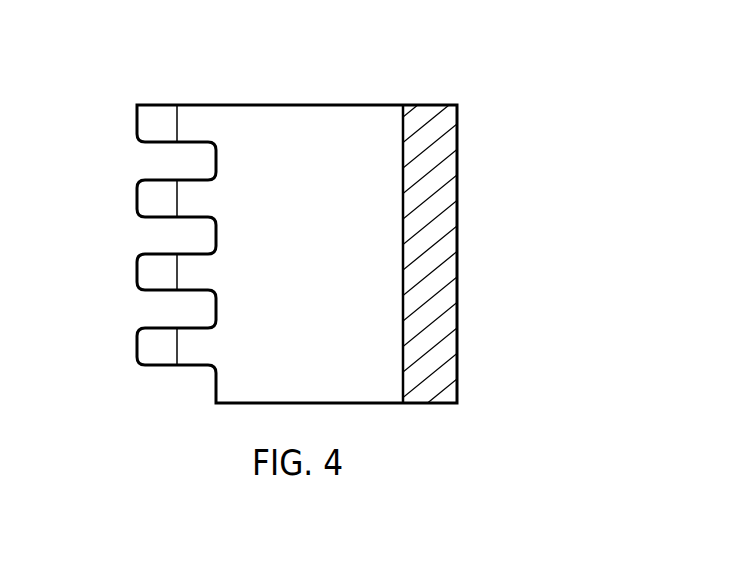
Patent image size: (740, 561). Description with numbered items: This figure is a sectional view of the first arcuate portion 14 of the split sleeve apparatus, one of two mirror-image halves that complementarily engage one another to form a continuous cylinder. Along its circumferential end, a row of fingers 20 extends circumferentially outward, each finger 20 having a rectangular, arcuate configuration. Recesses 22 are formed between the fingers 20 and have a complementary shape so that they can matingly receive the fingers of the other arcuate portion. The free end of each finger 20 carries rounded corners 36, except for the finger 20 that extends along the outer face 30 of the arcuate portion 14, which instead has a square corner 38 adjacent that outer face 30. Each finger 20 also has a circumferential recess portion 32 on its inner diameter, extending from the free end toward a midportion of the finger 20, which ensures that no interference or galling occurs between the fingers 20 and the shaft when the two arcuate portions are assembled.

The first arcuate portion 14 is at (458, 155).
The outer face 30 is at (305, 102).
The square corner 38 is at (137, 103).
The recesses 22 is at (210, 162).
The rounded corners 36 is at (138, 183).
The fingers 20 is at (162, 218).
The circumferential recess portion 32 is at (138, 262).